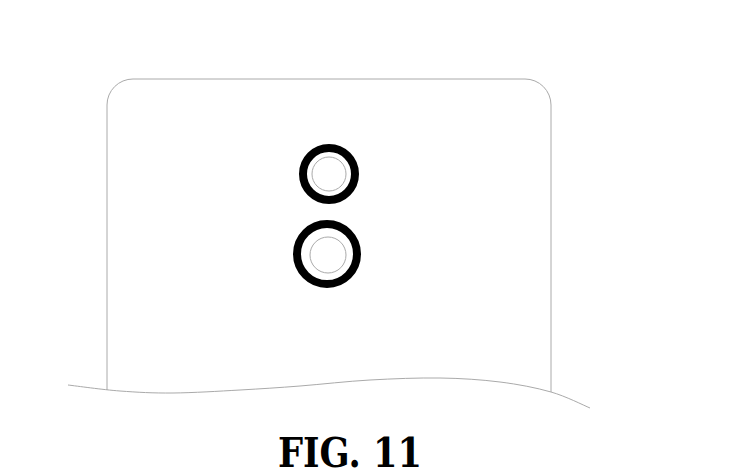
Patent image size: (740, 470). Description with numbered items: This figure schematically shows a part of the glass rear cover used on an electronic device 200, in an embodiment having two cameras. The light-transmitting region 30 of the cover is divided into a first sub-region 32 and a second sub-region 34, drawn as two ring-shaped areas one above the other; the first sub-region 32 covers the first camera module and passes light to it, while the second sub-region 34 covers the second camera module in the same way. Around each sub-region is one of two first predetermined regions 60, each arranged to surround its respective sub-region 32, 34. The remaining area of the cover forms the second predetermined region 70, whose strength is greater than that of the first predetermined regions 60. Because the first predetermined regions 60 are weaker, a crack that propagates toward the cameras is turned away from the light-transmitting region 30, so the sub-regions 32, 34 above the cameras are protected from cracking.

The electronic device 200 is at (348, 47).
The second predetermined region 70 is at (177, 105).
The light-transmitting region 30 is at (476, 216).
The first sub-region 32 is at (329, 174).
The second sub-region 34 is at (328, 255).
The first predetermined region 60 is at (329, 174).